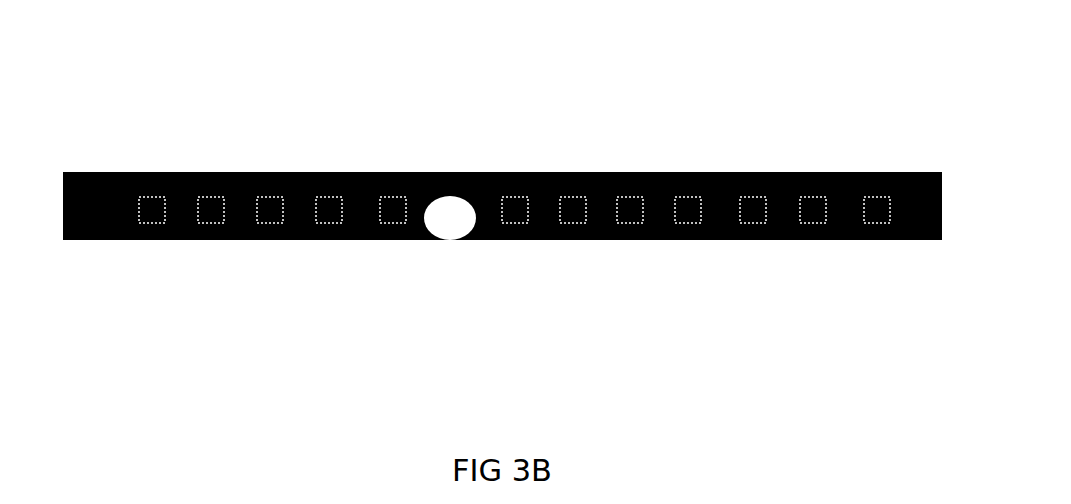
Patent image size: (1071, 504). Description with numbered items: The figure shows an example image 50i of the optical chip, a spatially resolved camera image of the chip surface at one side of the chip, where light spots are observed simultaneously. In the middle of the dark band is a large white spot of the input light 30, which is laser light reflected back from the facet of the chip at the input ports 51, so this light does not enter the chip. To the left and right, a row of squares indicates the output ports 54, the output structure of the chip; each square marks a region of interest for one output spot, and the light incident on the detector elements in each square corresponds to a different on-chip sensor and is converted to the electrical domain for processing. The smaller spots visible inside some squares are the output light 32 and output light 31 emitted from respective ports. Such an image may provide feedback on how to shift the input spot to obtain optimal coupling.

The image 50i is at (149, 87).
The output ports 54 is at (408, 157).
The input ports 51 is at (452, 157).
The input light 30 is at (452, 238).
The output light 32 is at (152, 226).
The output light 31 is at (753, 226).